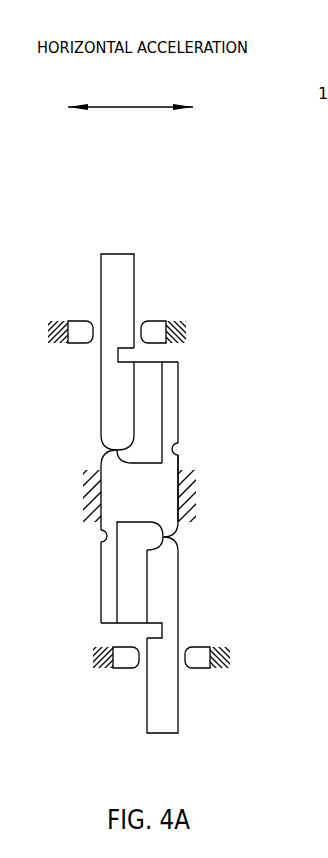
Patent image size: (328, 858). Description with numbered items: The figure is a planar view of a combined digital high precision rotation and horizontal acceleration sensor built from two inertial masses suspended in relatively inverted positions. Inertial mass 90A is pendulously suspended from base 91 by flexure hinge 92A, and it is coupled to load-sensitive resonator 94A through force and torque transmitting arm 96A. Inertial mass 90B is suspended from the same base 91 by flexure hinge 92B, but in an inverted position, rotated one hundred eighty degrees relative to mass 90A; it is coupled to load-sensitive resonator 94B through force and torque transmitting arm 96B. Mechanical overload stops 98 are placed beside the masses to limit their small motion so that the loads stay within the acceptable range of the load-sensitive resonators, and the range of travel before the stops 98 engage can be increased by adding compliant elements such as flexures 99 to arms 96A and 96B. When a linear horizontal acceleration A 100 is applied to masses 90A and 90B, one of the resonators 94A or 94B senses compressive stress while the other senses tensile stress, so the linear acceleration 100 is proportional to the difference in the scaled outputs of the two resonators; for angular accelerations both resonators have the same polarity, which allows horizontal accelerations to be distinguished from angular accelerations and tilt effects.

The linear horizontal acceleration A 100 is at (136, 92).
The mechanical overload stop 98 is at (72, 318).
The inertial mass 90B is at (113, 390).
The load-sensitive resonator 94B is at (152, 357).
The force and torque transmitting arm 96B is at (172, 405).
The flexure 99 is at (173, 450).
The flexure hinge 92B is at (117, 450).
The base 91 is at (143, 493).
The flexure hinge 92A is at (163, 538).
The force and torque transmitting arm 96A is at (108, 578).
The load-sensitive resonator 94A is at (127, 630).
The inertial mass 90A is at (165, 593).